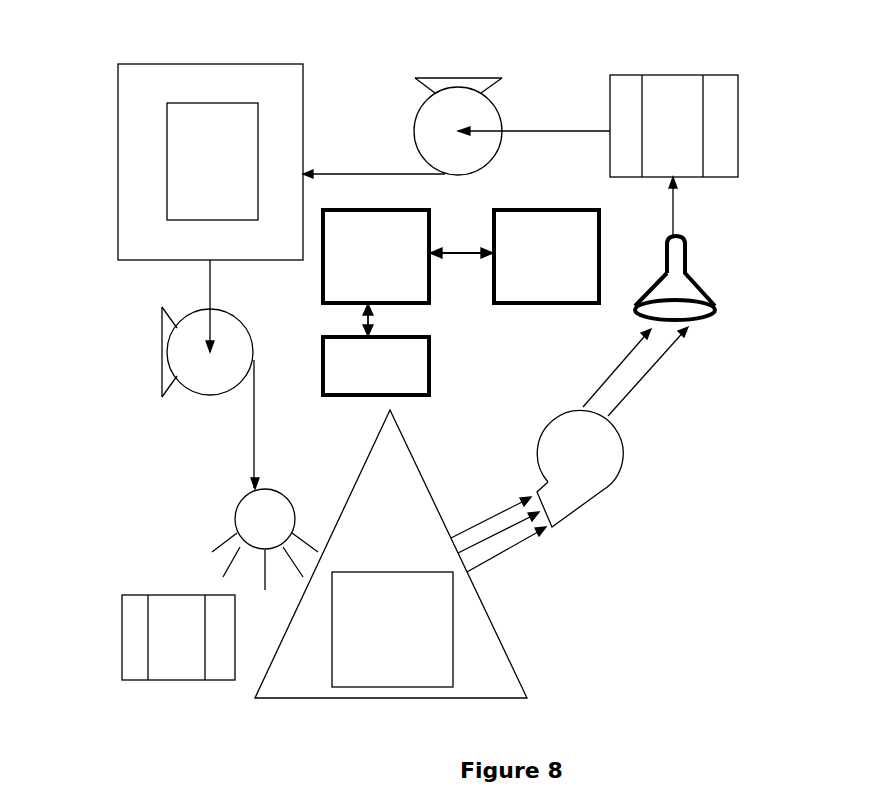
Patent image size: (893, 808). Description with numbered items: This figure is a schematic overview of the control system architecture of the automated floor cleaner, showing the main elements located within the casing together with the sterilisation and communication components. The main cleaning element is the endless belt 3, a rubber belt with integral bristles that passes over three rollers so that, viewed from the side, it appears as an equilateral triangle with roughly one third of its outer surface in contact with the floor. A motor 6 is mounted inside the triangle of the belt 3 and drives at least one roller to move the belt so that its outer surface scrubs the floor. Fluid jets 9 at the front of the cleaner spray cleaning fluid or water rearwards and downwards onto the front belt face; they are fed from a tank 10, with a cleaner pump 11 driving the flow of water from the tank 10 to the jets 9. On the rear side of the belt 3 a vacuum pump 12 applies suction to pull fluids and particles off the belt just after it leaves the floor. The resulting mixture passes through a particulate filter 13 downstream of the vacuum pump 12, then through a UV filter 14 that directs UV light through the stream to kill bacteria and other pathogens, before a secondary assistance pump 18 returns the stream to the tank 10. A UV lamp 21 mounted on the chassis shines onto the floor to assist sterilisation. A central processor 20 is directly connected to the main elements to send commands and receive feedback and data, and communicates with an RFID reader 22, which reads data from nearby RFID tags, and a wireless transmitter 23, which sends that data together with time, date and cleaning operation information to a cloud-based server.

The endless belt 3 is at (297, 688).
The motor 6 is at (405, 645).
The fluid jets 9 is at (252, 513).
The tank 10 is at (177, 123).
The cleaner pump 11 is at (200, 369).
The vacuum pump 12 is at (587, 475).
The particulate filter 13 is at (717, 312).
The UV filter 14 is at (648, 150).
The secondary assistance pump 18 is at (460, 113).
The processor 20 is at (376, 256).
The UV lamp 21 is at (175, 638).
The RFID reader 22 is at (546, 256).
The wireless transmitter 23 is at (376, 366).